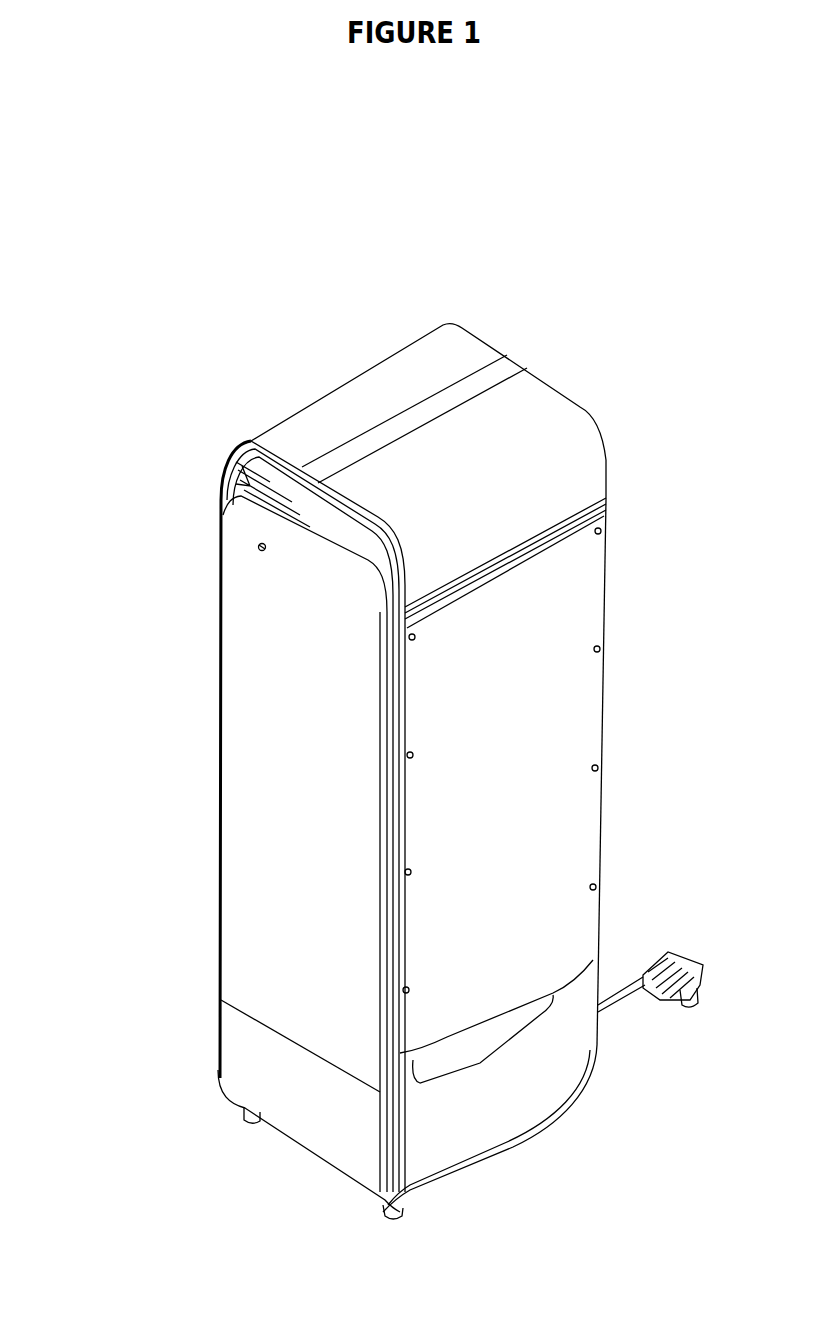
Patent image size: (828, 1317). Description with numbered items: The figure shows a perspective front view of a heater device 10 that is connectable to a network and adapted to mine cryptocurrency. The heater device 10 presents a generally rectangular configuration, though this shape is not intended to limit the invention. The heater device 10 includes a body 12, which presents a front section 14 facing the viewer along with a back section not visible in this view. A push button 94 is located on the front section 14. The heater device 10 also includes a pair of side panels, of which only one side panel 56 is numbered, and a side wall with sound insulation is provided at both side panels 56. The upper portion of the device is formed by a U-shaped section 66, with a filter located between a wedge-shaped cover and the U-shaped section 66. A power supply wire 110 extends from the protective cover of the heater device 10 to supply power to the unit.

The heater device 10 is at (266, 348).
The body 12 is at (208, 721).
The front section 14 is at (268, 833).
The side panel 56 is at (557, 672).
The U-shaped section 66 is at (563, 432).
The push button 94 is at (258, 547).
The power supply wire 110 is at (620, 988).